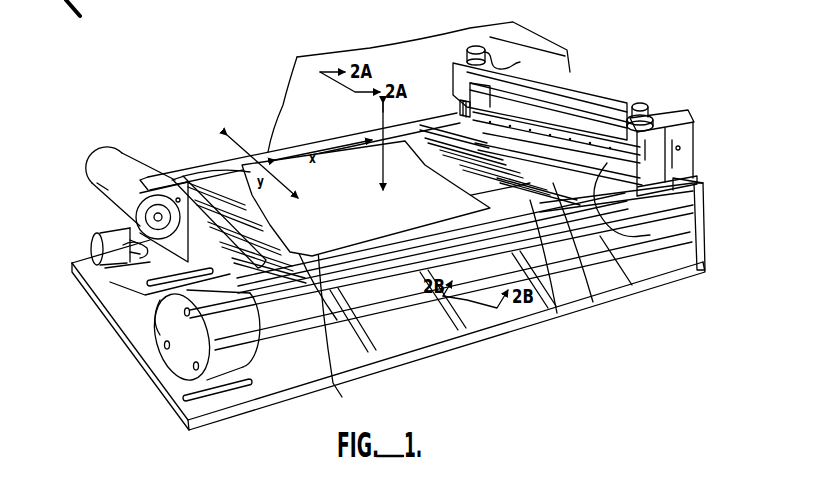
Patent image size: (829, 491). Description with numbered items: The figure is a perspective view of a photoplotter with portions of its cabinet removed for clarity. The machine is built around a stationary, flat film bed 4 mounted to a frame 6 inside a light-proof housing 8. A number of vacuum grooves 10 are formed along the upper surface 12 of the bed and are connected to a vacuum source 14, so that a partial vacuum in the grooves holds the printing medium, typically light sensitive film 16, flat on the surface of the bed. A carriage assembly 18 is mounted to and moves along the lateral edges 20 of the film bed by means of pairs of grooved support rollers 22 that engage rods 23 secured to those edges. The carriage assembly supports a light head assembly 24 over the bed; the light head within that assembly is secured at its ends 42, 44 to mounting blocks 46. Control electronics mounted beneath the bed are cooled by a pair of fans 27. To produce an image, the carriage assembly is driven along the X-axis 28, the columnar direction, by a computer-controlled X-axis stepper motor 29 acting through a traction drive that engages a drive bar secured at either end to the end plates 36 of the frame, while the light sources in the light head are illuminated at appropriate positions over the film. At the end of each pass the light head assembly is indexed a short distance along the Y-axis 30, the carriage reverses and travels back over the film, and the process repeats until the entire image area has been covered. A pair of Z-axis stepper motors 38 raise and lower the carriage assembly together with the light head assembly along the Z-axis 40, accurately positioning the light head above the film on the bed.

The film bed 4 is at (188, 161).
The frame 6 is at (718, 186).
The light-proof housing 8 is at (518, 26).
The vacuum grooves 10 is at (325, 375).
The upper surface 12 is at (100, 199).
The vacuum source 14 is at (185, 353).
The light sensitive film 16 is at (407, 217).
The carriage assembly 18 is at (552, 59).
The lateral edges 20 is at (262, 140).
The grooved support rollers 22 is at (640, 212).
The rods 23 is at (557, 313).
The light head assembly 24 is at (534, 147).
The fans 27 is at (97, 183).
The X-axis 28 is at (318, 155).
The X-axis stepper motor 29 is at (91, 247).
The Y-axis 30 is at (247, 157).
The end plates 36 is at (248, 372).
The Z-axis stepper motors 38 is at (472, 46).
The Z-axis 40 is at (383, 125).
The end of light head 42 is at (478, 120).
The end of light head 44 is at (650, 235).
The mounting blocks 46 is at (470, 90).